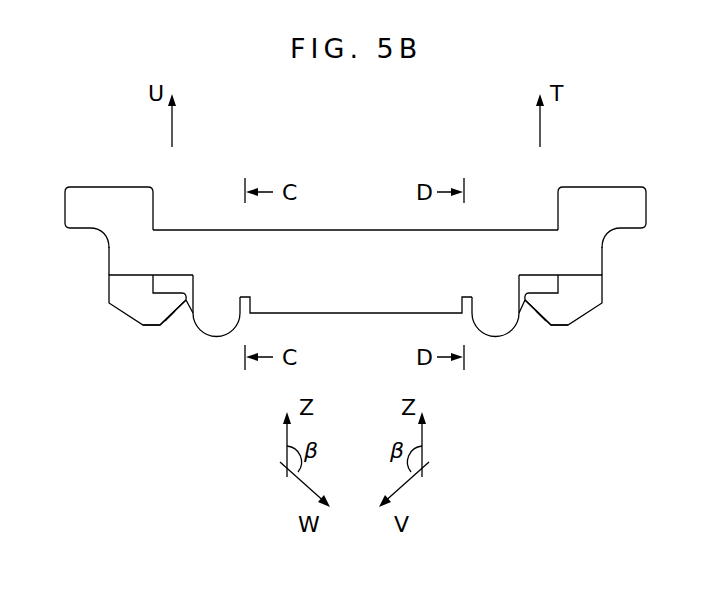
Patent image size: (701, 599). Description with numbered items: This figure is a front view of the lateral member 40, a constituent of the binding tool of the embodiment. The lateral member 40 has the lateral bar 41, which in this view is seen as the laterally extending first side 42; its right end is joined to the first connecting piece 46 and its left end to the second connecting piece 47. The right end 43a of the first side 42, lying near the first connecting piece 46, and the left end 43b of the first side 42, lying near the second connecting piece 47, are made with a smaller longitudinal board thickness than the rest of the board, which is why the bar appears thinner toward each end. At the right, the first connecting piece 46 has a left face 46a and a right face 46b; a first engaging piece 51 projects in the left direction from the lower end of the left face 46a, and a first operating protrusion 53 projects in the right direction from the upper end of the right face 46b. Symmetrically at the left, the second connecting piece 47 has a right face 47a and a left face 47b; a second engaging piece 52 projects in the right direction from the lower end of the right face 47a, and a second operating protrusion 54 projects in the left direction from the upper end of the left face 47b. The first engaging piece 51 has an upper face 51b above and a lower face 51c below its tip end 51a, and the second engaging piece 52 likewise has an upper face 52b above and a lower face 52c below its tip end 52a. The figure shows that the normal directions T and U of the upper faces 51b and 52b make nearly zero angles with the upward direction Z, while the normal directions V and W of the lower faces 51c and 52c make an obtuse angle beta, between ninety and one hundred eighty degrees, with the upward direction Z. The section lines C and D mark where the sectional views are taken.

The lateral member 40 is at (424, 152).
The lateral bar 41 is at (330, 229).
The first side 42 is at (343, 300).
The right end of the first side 43a is at (539, 240).
The left end of the first side 43b is at (168, 240).
The first connecting piece 46 is at (590, 284).
The left face of the first connecting piece 46a is at (536, 296).
The right face of the first connecting piece 46b is at (603, 253).
The second connecting piece 47 is at (117, 284).
The right face of the second connecting piece 47a is at (157, 291).
The left face of the second connecting piece 47b is at (108, 253).
The first engaging piece 51 is at (543, 318).
The tip end of the first engaging piece 51a is at (538, 321).
The upper face of the first engaging piece 51b is at (528, 300).
The lower face of the first engaging piece 51c is at (552, 328).
The second engaging piece 52 is at (168, 317).
The tip end of the second engaging piece 52a is at (172, 320).
The upper face of the second engaging piece 52b is at (180, 303).
The lower face of the second engaging piece 52c is at (163, 330).
The first operating protrusion 53 is at (622, 192).
The second operating protrusion 54 is at (88, 192).